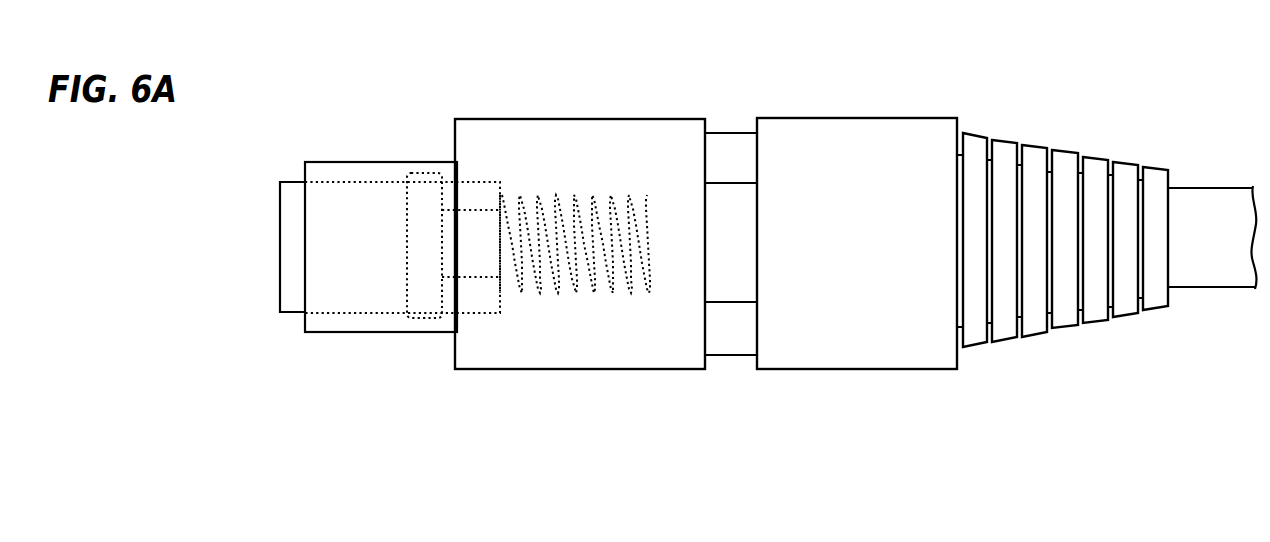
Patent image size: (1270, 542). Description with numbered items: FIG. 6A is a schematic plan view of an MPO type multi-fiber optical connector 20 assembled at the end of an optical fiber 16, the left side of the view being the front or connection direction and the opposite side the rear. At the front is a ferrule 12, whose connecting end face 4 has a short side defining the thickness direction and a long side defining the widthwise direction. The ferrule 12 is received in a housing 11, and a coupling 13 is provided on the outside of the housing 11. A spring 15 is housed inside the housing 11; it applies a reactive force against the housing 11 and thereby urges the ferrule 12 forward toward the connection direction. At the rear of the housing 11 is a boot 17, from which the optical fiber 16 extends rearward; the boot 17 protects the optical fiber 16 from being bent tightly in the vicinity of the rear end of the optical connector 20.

The connecting end face 4 is at (280, 287).
The housing 11 is at (370, 320).
The ferrule 12 is at (294, 304).
The coupling 13 is at (518, 362).
The spring 15 is at (551, 195).
The optical fiber 16 is at (1208, 266).
The boot 17 is at (852, 360).
The multi-fiber optical connector 20 is at (770, 94).